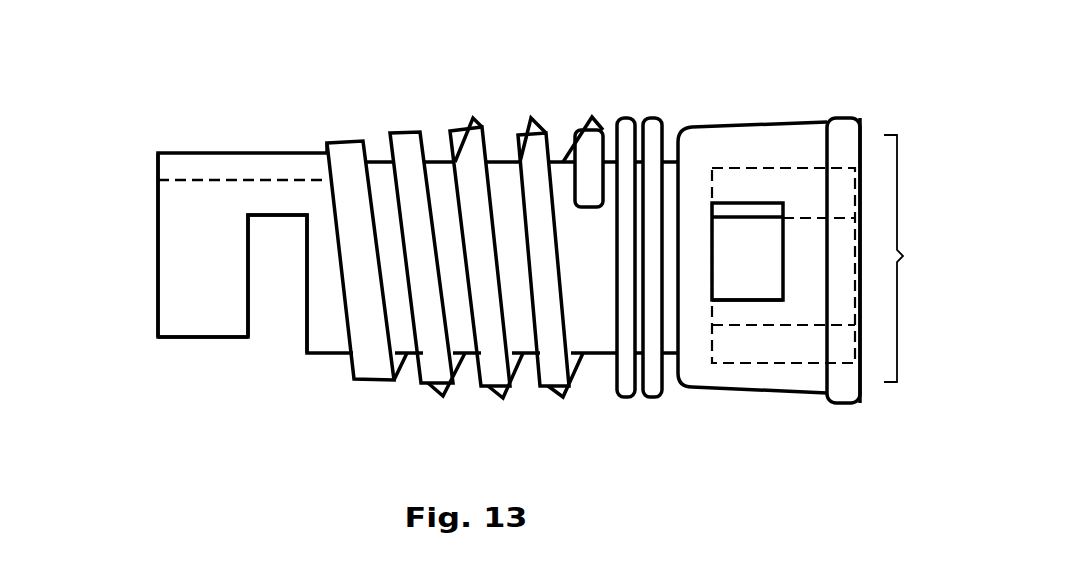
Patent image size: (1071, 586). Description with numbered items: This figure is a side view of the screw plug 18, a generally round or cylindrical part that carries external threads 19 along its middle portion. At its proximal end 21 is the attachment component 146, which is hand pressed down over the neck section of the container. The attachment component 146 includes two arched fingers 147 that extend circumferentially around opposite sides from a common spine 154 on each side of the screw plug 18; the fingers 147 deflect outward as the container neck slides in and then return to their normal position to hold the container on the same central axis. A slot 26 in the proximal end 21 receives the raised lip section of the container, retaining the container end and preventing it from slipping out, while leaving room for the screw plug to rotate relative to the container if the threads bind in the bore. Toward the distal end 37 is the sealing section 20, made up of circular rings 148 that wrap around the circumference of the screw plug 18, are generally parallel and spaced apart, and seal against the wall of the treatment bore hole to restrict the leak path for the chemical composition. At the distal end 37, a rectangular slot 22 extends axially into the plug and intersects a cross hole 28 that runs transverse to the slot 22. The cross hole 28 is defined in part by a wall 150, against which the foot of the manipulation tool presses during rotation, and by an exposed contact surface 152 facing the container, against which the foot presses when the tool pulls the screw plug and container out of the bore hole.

The attachment component 146 is at (163, 137).
The common spine 154 is at (270, 170).
The proximal end 21 is at (188, 266).
The arched fingers 147 is at (178, 307).
The slot 26 is at (277, 345).
The external threads 19 is at (600, 107).
The circular rings 148 is at (653, 118).
The sealing section 20 is at (602, 408).
The screw plug 18 is at (715, 138).
The cross hole 28 is at (738, 234).
The exposed contact surface 152 is at (785, 240).
The wall 150 is at (727, 298).
The slot 22 is at (878, 114).
The distal end 37 is at (921, 258).